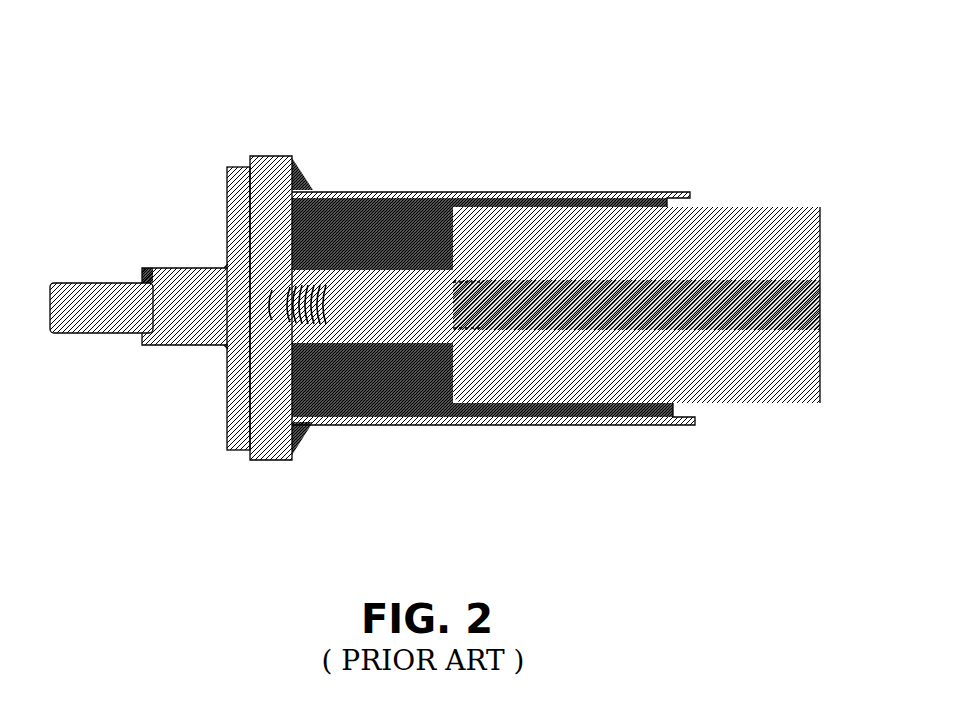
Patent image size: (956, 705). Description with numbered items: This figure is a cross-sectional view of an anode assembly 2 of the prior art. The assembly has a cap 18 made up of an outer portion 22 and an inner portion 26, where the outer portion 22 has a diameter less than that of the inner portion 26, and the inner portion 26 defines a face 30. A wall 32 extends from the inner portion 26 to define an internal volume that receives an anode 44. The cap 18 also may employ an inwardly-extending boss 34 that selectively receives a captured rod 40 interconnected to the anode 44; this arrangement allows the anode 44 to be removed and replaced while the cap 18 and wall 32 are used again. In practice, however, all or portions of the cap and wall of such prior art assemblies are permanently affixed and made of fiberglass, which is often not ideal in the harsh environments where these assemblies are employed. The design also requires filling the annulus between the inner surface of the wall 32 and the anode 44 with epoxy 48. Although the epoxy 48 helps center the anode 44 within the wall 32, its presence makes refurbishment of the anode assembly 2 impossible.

The anode assembly 2 is at (486, 132).
The cap 18 is at (250, 243).
The outer portion 22 is at (228, 190).
The face 30 is at (250, 160).
The inner portion 26 is at (268, 463).
The wall 32 is at (613, 190).
The inwardly-extending boss 34 is at (390, 270).
The captured rod 40 is at (703, 302).
The anode 44 is at (783, 248).
The epoxy 48 is at (393, 380).